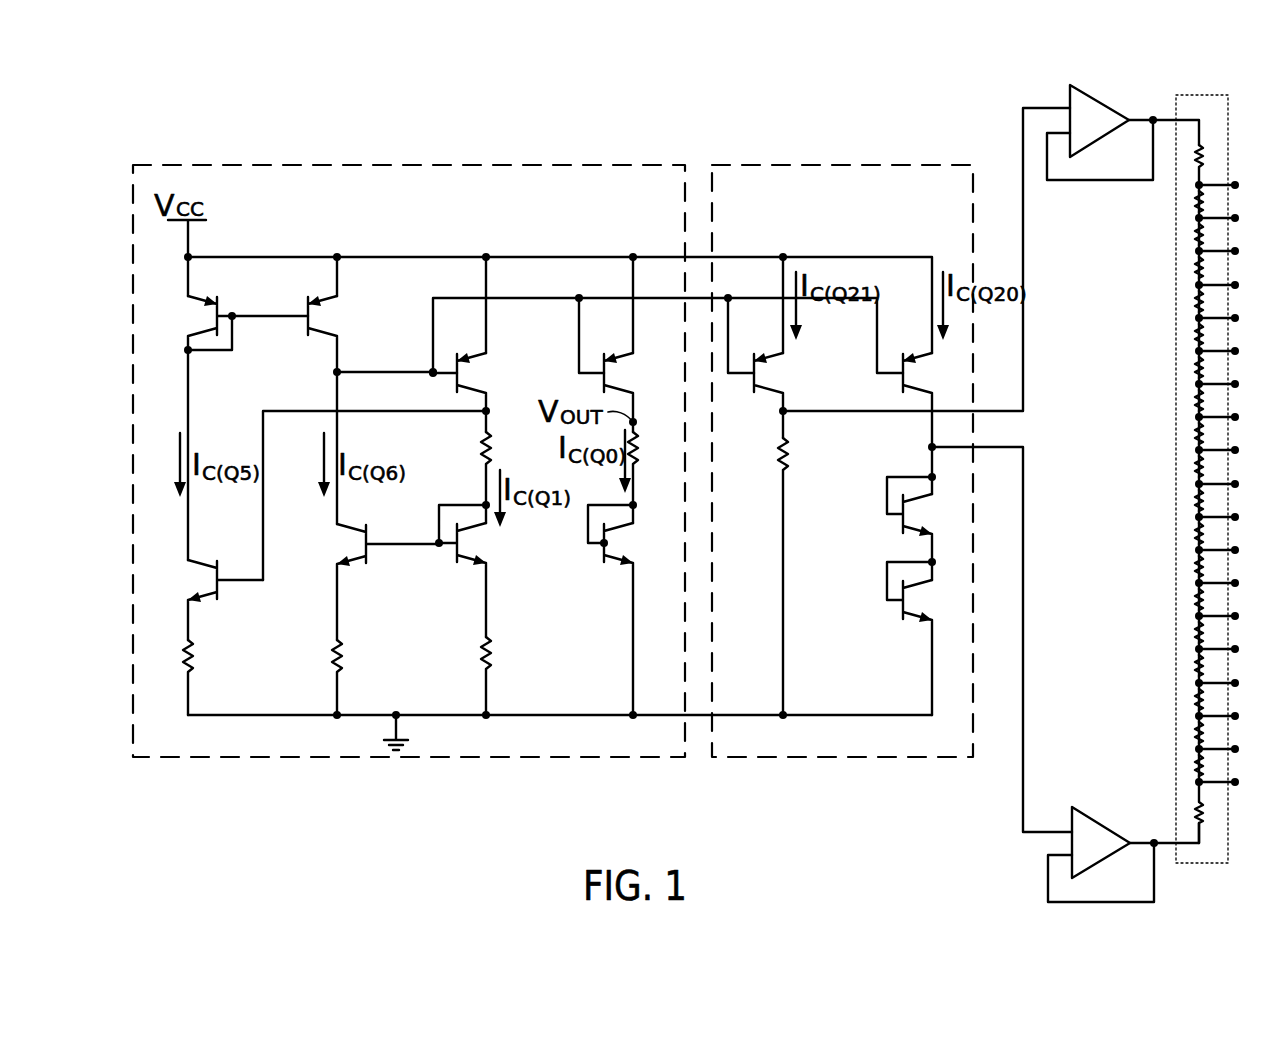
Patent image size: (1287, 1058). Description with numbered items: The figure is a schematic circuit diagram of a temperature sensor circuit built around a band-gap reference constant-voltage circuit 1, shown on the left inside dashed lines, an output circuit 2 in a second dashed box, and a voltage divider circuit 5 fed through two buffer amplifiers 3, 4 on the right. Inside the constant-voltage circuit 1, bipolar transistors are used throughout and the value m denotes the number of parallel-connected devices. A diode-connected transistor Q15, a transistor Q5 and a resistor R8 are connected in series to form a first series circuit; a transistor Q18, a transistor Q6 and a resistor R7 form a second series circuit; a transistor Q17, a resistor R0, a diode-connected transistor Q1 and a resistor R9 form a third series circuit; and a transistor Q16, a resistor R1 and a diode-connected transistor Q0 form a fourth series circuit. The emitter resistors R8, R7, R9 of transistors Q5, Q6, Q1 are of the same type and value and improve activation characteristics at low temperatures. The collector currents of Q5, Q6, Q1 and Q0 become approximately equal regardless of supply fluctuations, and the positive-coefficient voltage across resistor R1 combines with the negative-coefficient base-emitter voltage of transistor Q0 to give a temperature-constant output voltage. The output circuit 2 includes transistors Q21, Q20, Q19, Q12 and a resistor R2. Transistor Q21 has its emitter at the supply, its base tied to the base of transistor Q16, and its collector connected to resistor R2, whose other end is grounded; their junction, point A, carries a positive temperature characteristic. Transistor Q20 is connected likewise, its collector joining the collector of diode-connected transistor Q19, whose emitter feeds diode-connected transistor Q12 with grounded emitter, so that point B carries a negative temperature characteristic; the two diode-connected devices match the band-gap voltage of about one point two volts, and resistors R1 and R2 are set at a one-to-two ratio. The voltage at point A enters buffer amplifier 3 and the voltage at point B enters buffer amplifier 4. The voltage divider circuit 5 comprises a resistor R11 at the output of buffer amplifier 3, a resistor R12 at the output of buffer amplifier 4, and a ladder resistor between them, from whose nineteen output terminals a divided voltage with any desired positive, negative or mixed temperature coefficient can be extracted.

The band-gap reference constant-voltage circuit 1 is at (342, 165).
The output circuit 2 is at (790, 165).
The buffer amplifier 3 is at (1093, 95).
The buffer amplifier 4 is at (1093, 817).
The voltage divider circuit 5 is at (1212, 95).
The diode-connected transistor Q15 is at (219, 428).
The transistor Q18 is at (372, 410).
The transistor Q17 is at (412, 462).
The transistor Q16 is at (659, 392).
The transistor Q21 is at (912, 273).
The transistor Q20 is at (987, 592).
The transistor Q5 is at (203, 600).
The transistor Q6 is at (363, 582).
The diode-connected transistor Q1 is at (496, 571).
The diode-connected transistor Q0 is at (651, 610).
The diode-connected transistor Q19 is at (911, 526).
The diode-connected transistor Q12 is at (911, 636).
The resistor R0 is at (509, 477).
The resistor R1 is at (657, 477).
The resistor R2 is at (809, 576).
The emitter resistor R7 is at (362, 677).
The emitter resistor R8 is at (214, 677).
The emitter resistor R9 is at (515, 676).
The resistor R11 is at (1234, 162).
The resistor R12 is at (1234, 812).